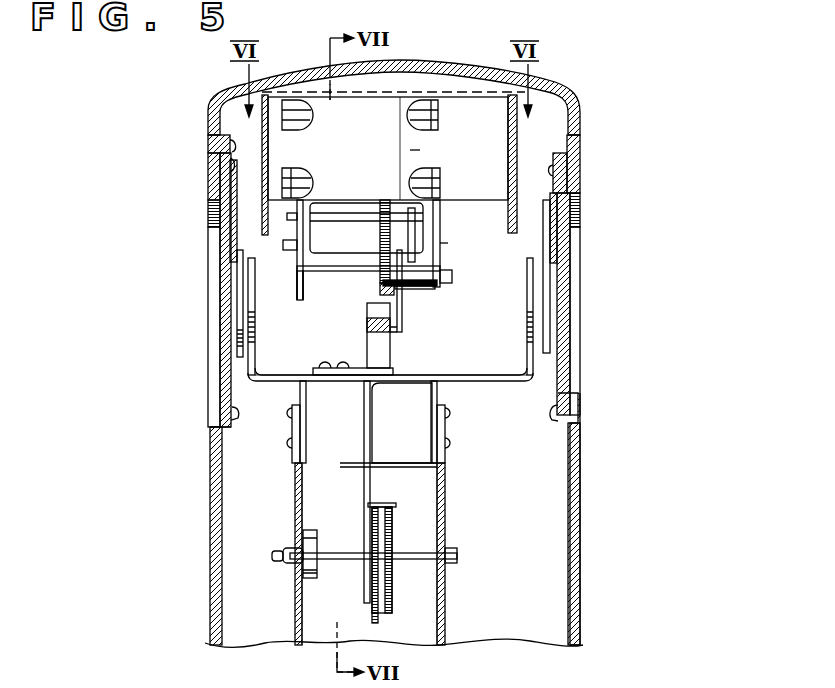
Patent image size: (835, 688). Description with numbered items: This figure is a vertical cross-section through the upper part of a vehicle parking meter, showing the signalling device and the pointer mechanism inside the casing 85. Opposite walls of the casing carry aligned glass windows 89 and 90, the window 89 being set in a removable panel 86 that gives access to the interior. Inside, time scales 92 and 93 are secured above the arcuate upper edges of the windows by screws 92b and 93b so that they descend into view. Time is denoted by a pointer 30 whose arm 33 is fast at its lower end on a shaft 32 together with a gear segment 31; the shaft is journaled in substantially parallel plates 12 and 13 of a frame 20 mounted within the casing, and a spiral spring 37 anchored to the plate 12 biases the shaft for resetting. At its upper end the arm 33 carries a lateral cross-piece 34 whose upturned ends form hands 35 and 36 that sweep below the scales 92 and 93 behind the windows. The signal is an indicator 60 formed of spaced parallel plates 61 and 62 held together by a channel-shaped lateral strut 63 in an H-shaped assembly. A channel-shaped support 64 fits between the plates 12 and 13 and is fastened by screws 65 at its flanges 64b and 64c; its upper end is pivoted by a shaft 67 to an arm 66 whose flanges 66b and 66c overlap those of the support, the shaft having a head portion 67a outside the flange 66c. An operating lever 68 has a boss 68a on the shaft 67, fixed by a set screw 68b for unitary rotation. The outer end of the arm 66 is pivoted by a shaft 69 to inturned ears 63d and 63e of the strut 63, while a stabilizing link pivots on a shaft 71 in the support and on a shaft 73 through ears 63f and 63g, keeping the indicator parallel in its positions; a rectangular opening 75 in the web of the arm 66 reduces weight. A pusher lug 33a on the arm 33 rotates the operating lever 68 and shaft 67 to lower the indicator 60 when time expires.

The plate 12 is at (295, 596).
The plate 13 is at (445, 607).
The frame 20 is at (446, 478).
The pointer 30 is at (371, 424).
The gear segment 31 is at (380, 615).
The shaft 32 is at (327, 552).
The arm 33 is at (372, 445).
The pusher means 33a is at (356, 350).
The cross-piece 34 is at (472, 378).
The hand 35 is at (255, 290).
The hand 36 is at (527, 280).
The spiral spring 37 is at (316, 574).
The indicator 60 is at (383, 103).
The indicator plate 61 is at (268, 160).
The indicator plate 62 is at (508, 152).
The lateral strut 63 is at (380, 172).
The inturned ear 63d is at (313, 184).
The inturned ear 63e is at (440, 182).
The inturned ear 63f is at (438, 120).
The inturned ear 63g is at (300, 126).
The support 64 is at (301, 338).
The flange 64b is at (300, 390).
The flange 64c is at (437, 392).
The screws 65 is at (290, 417).
The arm 66 is at (440, 234).
The flange 66b is at (297, 262).
The flange 66c is at (440, 246).
The shaft 67 is at (342, 273).
The head portion 67a is at (452, 278).
The operating lever 68 is at (402, 312).
The boss 68a is at (425, 288).
The set screw 68b is at (418, 290).
The shaft 69 is at (424, 178).
The shaft 71 is at (358, 222).
The shaft 73 is at (422, 117).
The opening 75 is at (379, 240).
The casing 85 is at (470, 62).
The panel 86 is at (210, 489).
The window 89 is at (222, 304).
The window 90 is at (550, 290).
The time scale 92 is at (238, 238).
The screws 92b is at (218, 160).
The time scale 93 is at (570, 234).
The screws 93b is at (552, 168).